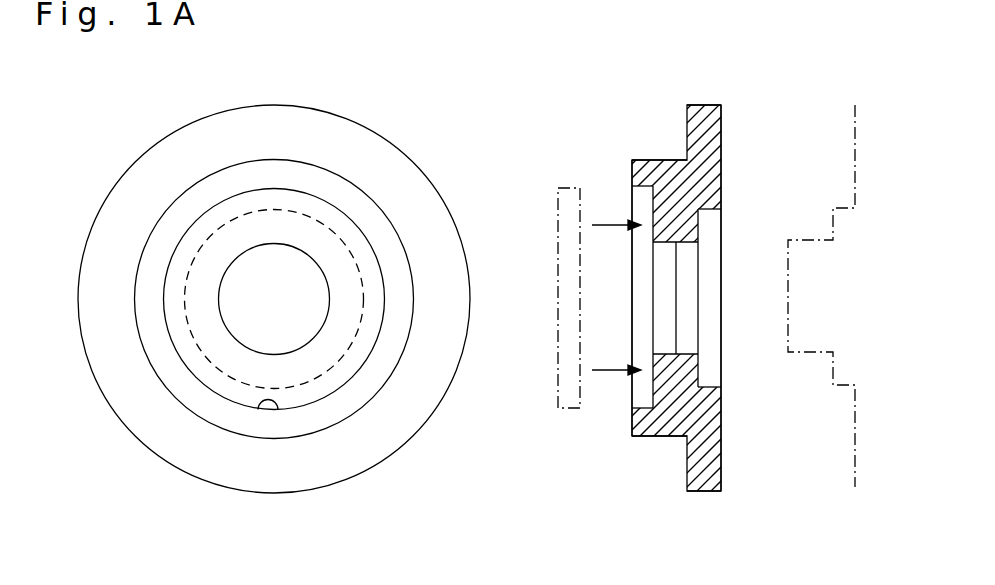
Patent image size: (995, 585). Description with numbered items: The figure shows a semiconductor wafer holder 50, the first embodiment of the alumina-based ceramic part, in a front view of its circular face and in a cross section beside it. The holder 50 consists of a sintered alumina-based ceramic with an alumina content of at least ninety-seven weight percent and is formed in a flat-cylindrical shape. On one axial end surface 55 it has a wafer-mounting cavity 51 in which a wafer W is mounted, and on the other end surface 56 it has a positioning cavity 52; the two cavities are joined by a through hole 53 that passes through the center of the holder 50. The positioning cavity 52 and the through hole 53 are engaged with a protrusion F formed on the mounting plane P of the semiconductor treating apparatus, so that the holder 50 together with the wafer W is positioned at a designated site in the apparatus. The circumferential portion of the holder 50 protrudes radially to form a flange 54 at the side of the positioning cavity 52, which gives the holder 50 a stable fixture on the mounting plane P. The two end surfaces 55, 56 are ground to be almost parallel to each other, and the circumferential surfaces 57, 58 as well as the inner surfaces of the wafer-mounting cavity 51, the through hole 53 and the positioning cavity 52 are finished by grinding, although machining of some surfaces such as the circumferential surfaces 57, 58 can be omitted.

The holder 50 is at (362, 134).
The wafer-mounting cavity 51 is at (278, 411).
The positioning cavity 52 is at (239, 221).
The through hole 53 is at (238, 340).
The flange 54 is at (425, 407).
The axial end surface 55 is at (388, 230).
The end surface 56 is at (385, 434).
The circumferential surface 57 is at (166, 395).
The circumferential surface 58 is at (192, 481).
The wafer W is at (558, 220).
The mounting plane P is at (850, 180).
The protrusion F is at (800, 355).